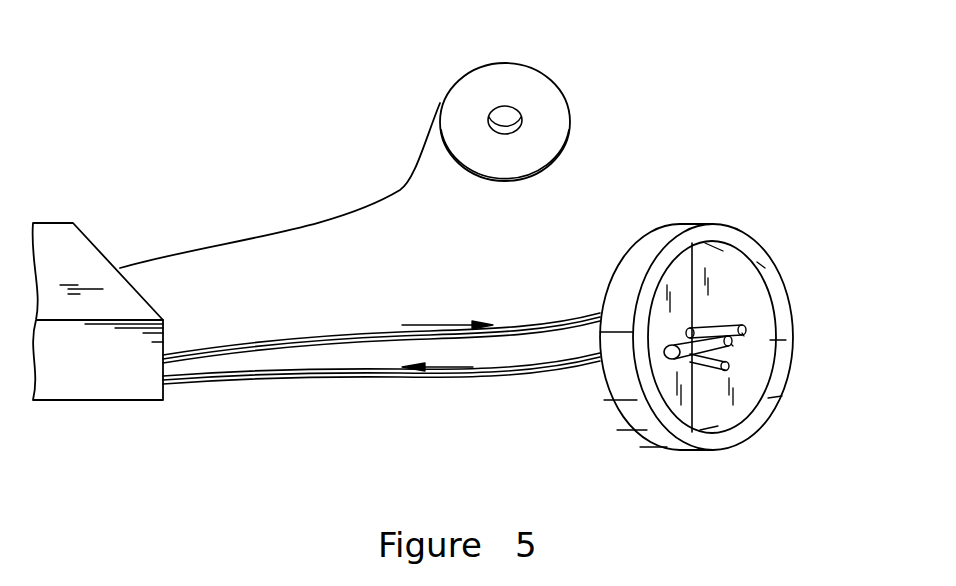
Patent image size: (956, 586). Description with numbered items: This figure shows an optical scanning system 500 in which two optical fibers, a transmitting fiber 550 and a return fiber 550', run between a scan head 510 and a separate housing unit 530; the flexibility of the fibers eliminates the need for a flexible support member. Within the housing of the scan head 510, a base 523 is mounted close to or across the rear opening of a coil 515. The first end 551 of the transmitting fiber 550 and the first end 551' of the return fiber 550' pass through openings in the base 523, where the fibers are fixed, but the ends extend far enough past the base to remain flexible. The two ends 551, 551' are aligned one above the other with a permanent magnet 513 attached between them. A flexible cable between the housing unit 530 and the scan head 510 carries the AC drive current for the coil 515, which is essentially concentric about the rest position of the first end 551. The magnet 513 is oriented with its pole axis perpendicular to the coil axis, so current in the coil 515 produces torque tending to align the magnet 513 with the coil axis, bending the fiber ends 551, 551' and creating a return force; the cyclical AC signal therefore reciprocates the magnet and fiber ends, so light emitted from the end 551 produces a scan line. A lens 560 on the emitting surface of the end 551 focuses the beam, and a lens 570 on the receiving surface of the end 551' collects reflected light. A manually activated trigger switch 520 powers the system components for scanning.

The optical scanning system 500 is at (315, 84).
The scan head 510 is at (743, 181).
The permanent magnet 513 is at (733, 343).
The coil 515 is at (780, 336).
The trigger switch 520 is at (550, 85).
The base 523 is at (725, 282).
The housing unit 530 is at (127, 228).
The transmitting fiber 550 is at (381, 327).
The return fiber 550' is at (381, 389).
The first end of the transmitting fiber 551 is at (763, 306).
The first end of the return fiber 551' is at (757, 402).
The lens 560 is at (744, 336).
The lens 570 is at (733, 346).